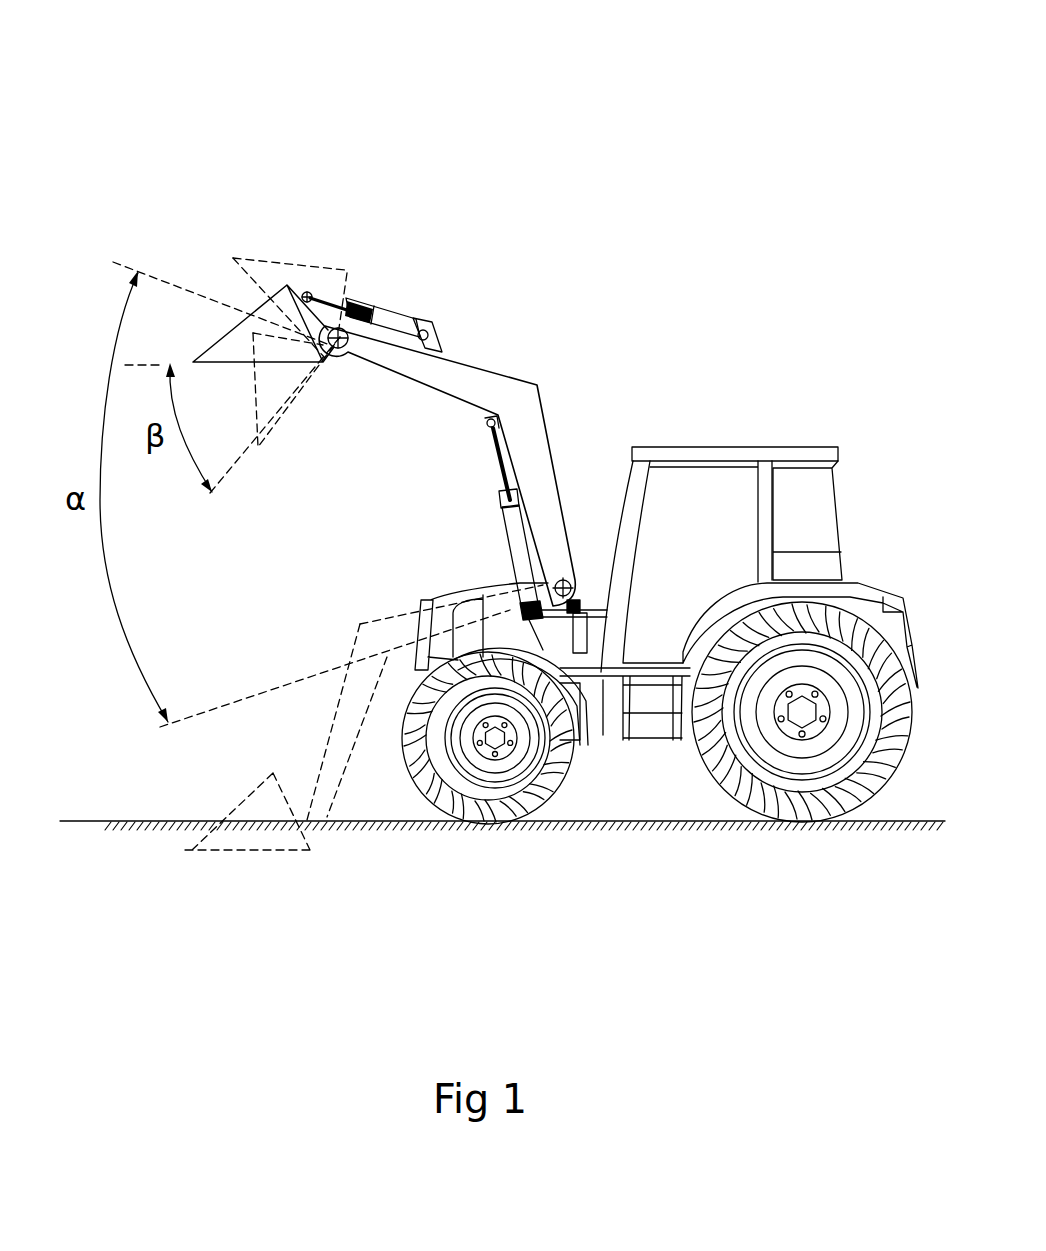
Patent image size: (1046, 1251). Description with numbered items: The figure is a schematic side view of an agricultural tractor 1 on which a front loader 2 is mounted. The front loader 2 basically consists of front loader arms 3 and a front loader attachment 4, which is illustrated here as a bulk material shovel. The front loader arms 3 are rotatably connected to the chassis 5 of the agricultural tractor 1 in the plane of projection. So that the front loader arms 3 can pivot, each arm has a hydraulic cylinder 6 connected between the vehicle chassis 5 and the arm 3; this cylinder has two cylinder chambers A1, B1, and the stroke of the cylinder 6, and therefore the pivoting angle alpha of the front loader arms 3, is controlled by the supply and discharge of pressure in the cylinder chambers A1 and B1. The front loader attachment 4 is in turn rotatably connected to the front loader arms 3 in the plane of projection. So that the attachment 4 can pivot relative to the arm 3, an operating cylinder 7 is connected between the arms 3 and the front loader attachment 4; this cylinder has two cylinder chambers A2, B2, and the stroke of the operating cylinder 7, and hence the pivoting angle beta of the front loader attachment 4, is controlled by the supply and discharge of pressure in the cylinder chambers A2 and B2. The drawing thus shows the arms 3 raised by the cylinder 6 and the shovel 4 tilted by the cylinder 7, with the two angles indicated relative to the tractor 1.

The agricultural tractor 1 is at (778, 423).
The front loader 2 is at (460, 333).
The front loader arms 3 is at (535, 458).
The front loader attachment 4 is at (287, 327).
The chassis 5 is at (580, 685).
The hydraulic cylinder 6 is at (497, 467).
The operating cylinder 7 is at (342, 303).
The cylinder chamber A1 is at (513, 558).
The cylinder chamber B1 is at (500, 503).
The cylinder chamber A2 is at (360, 303).
The cylinder chamber B2 is at (407, 312).